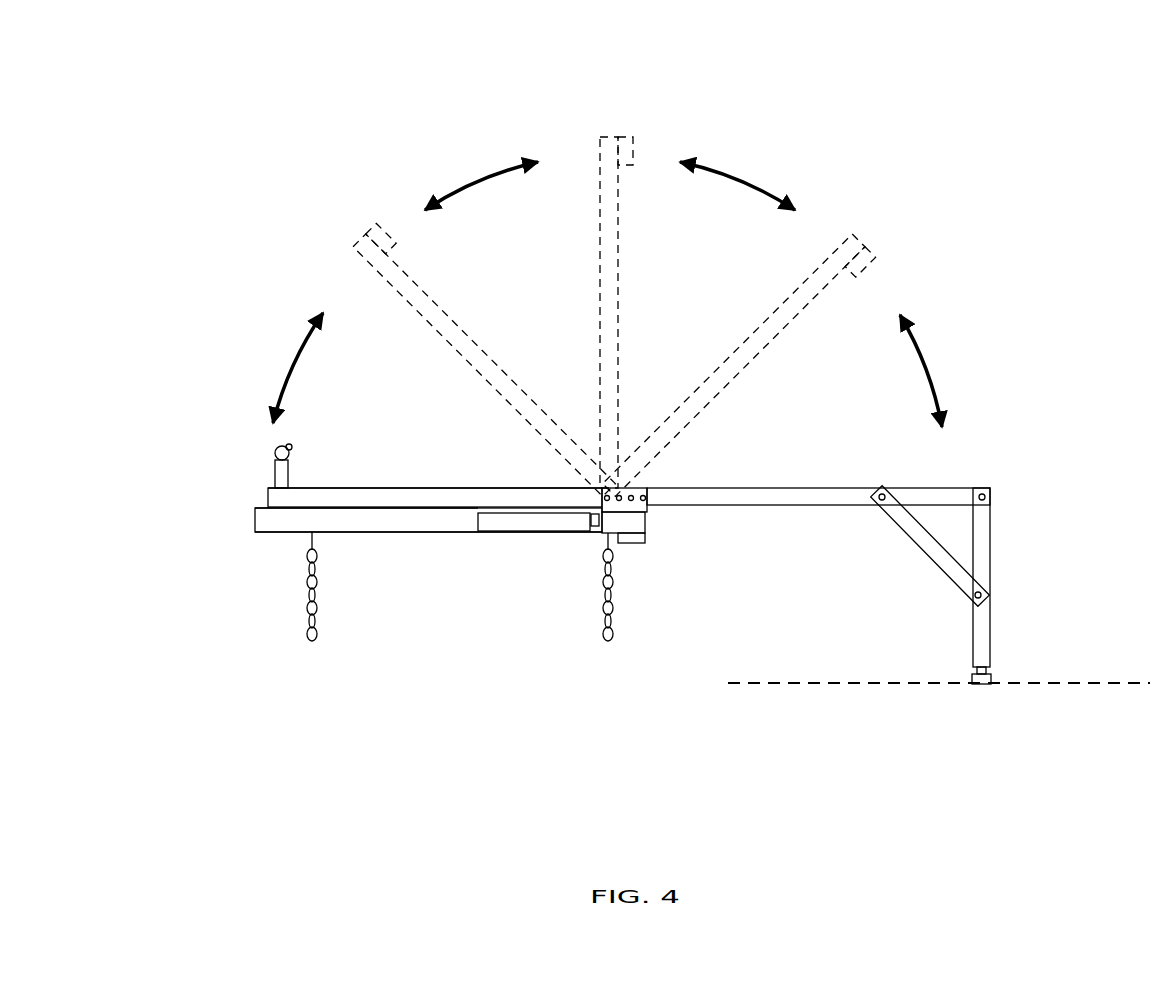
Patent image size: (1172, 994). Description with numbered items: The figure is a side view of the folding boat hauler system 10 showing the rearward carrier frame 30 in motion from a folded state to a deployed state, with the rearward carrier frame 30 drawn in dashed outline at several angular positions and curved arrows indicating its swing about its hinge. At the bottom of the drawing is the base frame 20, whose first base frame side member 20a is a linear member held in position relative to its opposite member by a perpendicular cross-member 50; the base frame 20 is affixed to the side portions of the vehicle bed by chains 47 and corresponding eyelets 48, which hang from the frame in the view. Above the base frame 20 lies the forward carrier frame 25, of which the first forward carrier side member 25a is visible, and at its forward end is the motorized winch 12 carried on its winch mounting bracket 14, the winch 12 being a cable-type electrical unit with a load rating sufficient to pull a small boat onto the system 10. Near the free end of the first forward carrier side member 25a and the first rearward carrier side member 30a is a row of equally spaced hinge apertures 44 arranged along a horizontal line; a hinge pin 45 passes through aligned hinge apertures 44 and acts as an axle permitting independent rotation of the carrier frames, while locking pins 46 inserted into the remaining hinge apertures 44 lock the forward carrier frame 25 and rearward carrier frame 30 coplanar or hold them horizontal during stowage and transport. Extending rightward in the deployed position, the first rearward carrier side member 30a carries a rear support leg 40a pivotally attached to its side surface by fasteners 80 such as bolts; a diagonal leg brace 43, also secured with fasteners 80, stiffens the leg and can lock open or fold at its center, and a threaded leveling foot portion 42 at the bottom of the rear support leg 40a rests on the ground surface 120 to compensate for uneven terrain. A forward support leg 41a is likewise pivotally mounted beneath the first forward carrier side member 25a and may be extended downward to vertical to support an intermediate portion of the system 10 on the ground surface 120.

The folding boat hauler system 10 is at (258, 203).
The motorized winch 12 is at (275, 452).
The winch mounting bracket 14 is at (272, 481).
The base frame 20 is at (467, 537).
The first base frame side member 20a is at (375, 518).
The forward carrier frame 25 is at (411, 486).
The first forward carrier side member 25a is at (356, 488).
The rearward carrier frame 30 is at (485, 352).
The first rearward carrier side member 30a is at (928, 488).
The rear support leg 40a is at (973, 628).
The forward support leg 41a is at (505, 522).
The threaded leveling foot portion 42 is at (590, 523).
The diagonal leg brace 43 is at (920, 540).
The hinge apertures 44 is at (624, 515).
The hinge pin 45 is at (600, 513).
The locking pins 46 is at (644, 502).
The chains 47 is at (307, 598).
The eyelets 48 is at (308, 545).
The cross-member 50 is at (440, 508).
The fasteners 80 is at (878, 498).
The ground surface 120 is at (1088, 683).